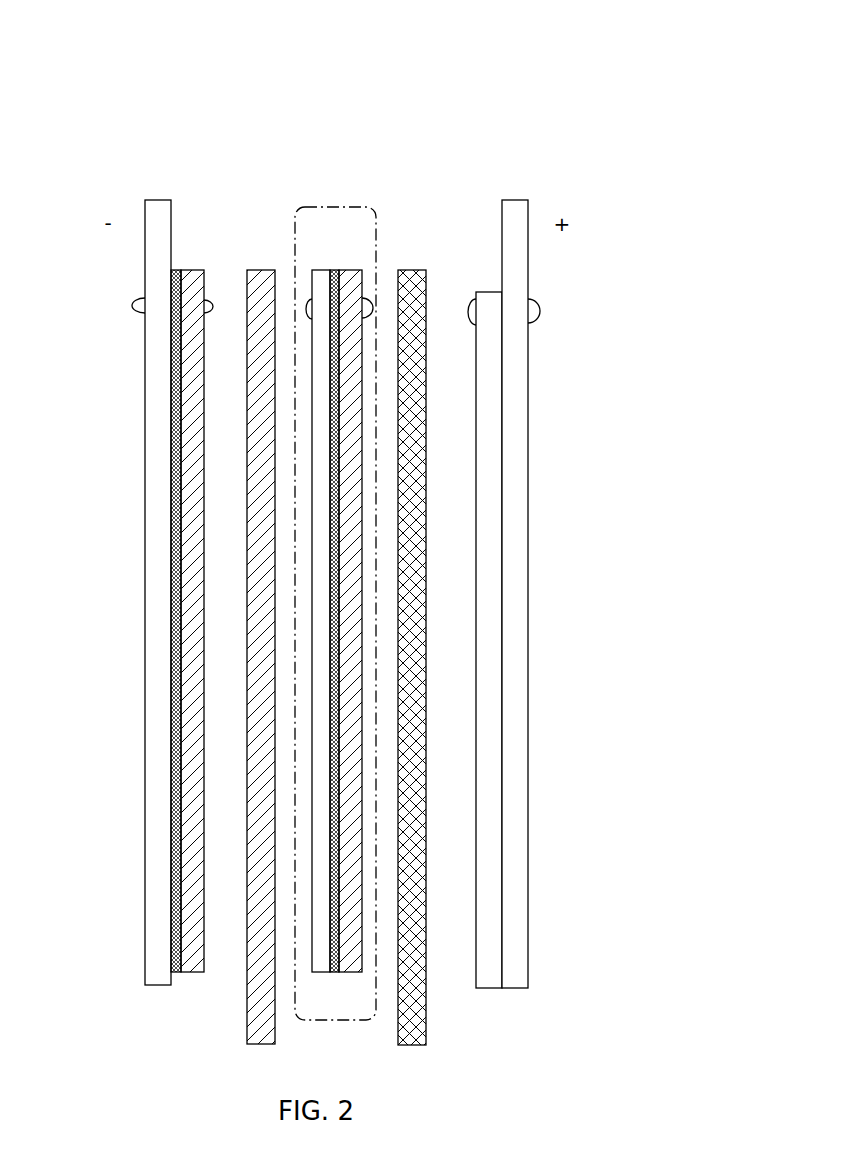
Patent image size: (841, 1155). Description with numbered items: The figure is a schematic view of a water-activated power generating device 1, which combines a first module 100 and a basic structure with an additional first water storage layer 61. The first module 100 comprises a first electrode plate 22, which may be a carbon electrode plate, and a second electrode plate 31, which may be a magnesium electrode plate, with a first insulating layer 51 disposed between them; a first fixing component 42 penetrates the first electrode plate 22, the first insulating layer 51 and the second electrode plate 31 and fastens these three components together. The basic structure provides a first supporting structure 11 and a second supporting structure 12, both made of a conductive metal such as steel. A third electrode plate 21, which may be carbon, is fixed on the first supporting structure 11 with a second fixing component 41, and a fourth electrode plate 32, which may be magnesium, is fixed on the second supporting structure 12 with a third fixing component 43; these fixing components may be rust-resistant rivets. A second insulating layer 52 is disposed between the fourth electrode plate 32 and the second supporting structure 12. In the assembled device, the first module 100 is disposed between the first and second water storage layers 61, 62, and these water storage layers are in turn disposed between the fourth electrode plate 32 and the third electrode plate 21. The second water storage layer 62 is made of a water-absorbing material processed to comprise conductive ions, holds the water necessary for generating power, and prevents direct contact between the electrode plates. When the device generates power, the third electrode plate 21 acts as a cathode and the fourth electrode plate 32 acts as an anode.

The water-activated power generating device 1 is at (632, 105).
The first module 100 is at (340, 207).
The first supporting structure 11 is at (518, 210).
The second supporting structure 12 is at (157, 205).
The third electrode plate 21 is at (490, 295).
The first electrode plate 22 is at (322, 273).
The second electrode plate 31 is at (350, 273).
The fourth electrode plate 32 is at (198, 273).
The second fixing component 41 is at (547, 312).
The first fixing component 42 is at (371, 298).
The third fixing component 43 is at (133, 304).
The first insulating layer 51 is at (333, 273).
The second insulating layer 52 is at (178, 273).
The first water storage layer 61 is at (415, 273).
The second water storage layer 62 is at (263, 273).